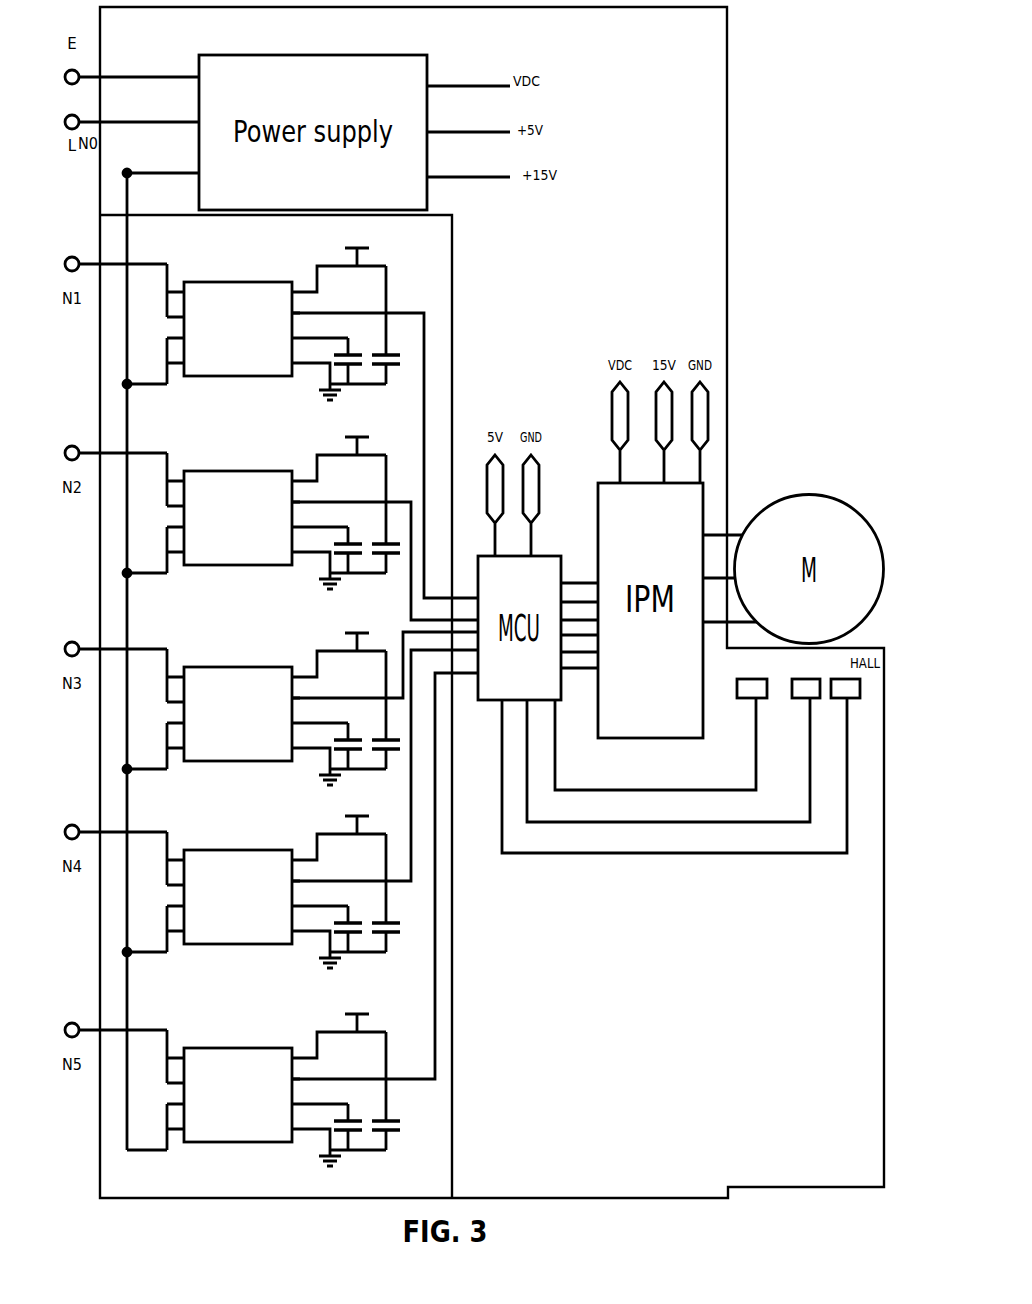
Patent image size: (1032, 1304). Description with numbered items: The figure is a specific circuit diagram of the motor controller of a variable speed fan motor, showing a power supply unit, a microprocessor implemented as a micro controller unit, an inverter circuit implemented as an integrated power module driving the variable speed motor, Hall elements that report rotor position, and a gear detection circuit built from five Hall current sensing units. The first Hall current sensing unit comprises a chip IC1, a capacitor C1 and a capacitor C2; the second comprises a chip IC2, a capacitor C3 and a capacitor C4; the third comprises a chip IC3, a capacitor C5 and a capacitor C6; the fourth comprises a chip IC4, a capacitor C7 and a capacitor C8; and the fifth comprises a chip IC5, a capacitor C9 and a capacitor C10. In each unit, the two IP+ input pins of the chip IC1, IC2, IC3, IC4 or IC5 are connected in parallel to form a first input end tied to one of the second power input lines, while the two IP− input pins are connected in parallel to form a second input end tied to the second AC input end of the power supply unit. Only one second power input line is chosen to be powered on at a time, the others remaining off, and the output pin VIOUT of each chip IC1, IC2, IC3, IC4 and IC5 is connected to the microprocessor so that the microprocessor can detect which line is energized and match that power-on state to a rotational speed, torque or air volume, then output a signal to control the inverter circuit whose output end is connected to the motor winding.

The chip IC1 is at (276, 320).
The chip IC2 is at (276, 509).
The chip IC3 is at (276, 705).
The chip IC4 is at (276, 888).
The chip IC5 is at (276, 1086).
The capacitor C1 is at (350, 358).
The capacitor C2 is at (387, 325).
The capacitor C3 is at (350, 547).
The capacitor C4 is at (387, 514).
The capacitor C5 is at (350, 743).
The capacitor C6 is at (387, 710).
The capacitor C7 is at (350, 926).
The capacitor C8 is at (387, 893).
The capacitor C9 is at (350, 1124).
The capacitor C10 is at (390, 1091).